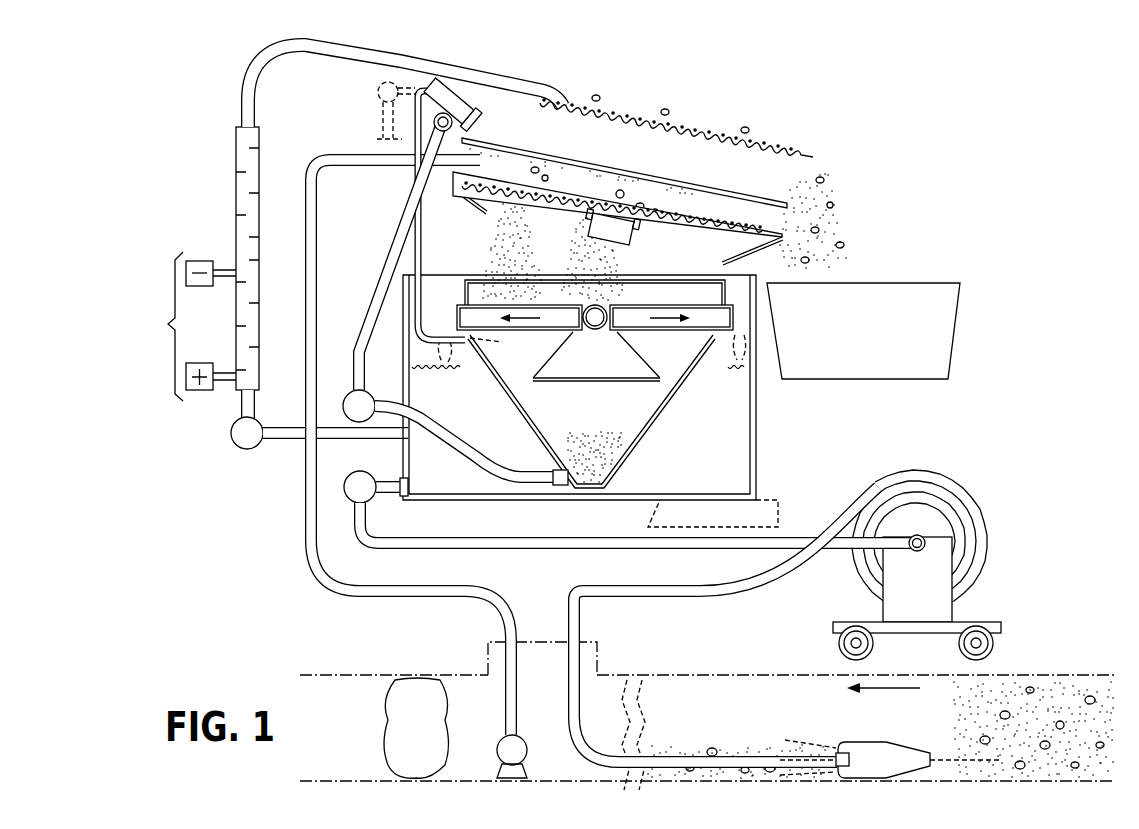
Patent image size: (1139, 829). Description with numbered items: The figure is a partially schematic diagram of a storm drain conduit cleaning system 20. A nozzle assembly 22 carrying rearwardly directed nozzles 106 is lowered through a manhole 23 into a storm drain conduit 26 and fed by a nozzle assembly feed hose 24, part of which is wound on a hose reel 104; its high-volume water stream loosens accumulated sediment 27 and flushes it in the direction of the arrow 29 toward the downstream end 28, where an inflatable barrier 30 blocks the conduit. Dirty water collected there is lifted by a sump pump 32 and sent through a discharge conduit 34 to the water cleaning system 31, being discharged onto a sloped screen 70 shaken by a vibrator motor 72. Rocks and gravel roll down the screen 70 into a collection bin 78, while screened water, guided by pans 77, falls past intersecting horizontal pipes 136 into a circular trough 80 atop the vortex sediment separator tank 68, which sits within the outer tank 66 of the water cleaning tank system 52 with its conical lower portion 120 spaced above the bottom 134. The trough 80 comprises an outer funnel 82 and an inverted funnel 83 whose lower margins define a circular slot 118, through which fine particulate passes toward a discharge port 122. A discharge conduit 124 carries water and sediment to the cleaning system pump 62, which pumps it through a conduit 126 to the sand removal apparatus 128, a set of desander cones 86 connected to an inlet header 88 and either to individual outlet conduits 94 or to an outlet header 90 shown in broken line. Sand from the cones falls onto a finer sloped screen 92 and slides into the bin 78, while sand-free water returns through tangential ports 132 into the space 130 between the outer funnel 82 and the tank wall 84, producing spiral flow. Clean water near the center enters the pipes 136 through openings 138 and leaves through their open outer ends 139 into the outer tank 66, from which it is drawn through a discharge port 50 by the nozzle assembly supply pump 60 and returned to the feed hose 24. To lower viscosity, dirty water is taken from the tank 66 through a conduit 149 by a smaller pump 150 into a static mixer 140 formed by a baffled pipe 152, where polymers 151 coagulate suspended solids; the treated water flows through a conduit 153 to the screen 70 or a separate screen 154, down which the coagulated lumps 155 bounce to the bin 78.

The storm drain conduit cleaning system 20 is at (809, 126).
The nozzle assembly 22 is at (890, 742).
The manhole 23 is at (542, 642).
The nozzle assembly feed hose 24 is at (583, 533).
The storm drain conduit 26 is at (1086, 672).
The accumulated sediment 27 is at (975, 716).
The downstream end 28 is at (476, 698).
The arrow 29 is at (895, 688).
The barrier 30 is at (382, 728).
The water cleaning system 31 is at (628, 160).
The sump pump 32 is at (527, 750).
The discharge conduit 34 is at (340, 155).
The outlet 50 is at (776, 500).
The water cleaning tank system 52 is at (757, 405).
The nozzle assembly supply pump 60 is at (374, 500).
The cleaning system pump 62 is at (348, 392).
The outer tank 66 is at (757, 439).
The vortex sediment separator tank 68 is at (640, 438).
The sloped screen 70 is at (548, 186).
The vibrator motor 72 is at (592, 236).
The pans 77 is at (466, 205).
The collection bin 78 is at (951, 332).
The circular trough 80 is at (577, 382).
The outer funnel 82 is at (674, 400).
The inverted funnel 83 is at (630, 382).
The wall of the vortex separator tank 84 is at (657, 424).
The desander cones 86 is at (484, 123).
The inlet header 88 is at (470, 105).
The outlet header 90 is at (378, 90).
The sloped screen 92 is at (711, 183).
The outlet conduit 94 is at (383, 128).
The hose reel 104 is at (986, 613).
The nozzles 106 is at (839, 752).
The circular slot 118 is at (536, 386).
The conical lower portion 120 is at (628, 454).
The discharge port 122 is at (556, 486).
The discharge conduit 124 is at (526, 470).
The conduit 126 is at (390, 262).
The sand removal apparatus 128 is at (480, 101).
The space 130 is at (496, 372).
The tangentially oriented ports 132 is at (503, 342).
The bottom of the outer tank 134 is at (478, 500).
The horizontal pipes 136 is at (468, 300).
The openings 138 is at (589, 330).
The open outer end 139 is at (458, 318).
The static mixer 140 is at (233, 197).
The conduit 149 is at (288, 440).
The pump 150 is at (231, 433).
The polymers 151 is at (168, 324).
The pipe 152 is at (259, 152).
The conduit 153 is at (242, 64).
The special screen 154 is at (813, 157).
The coagulated lumps 155 is at (600, 98).